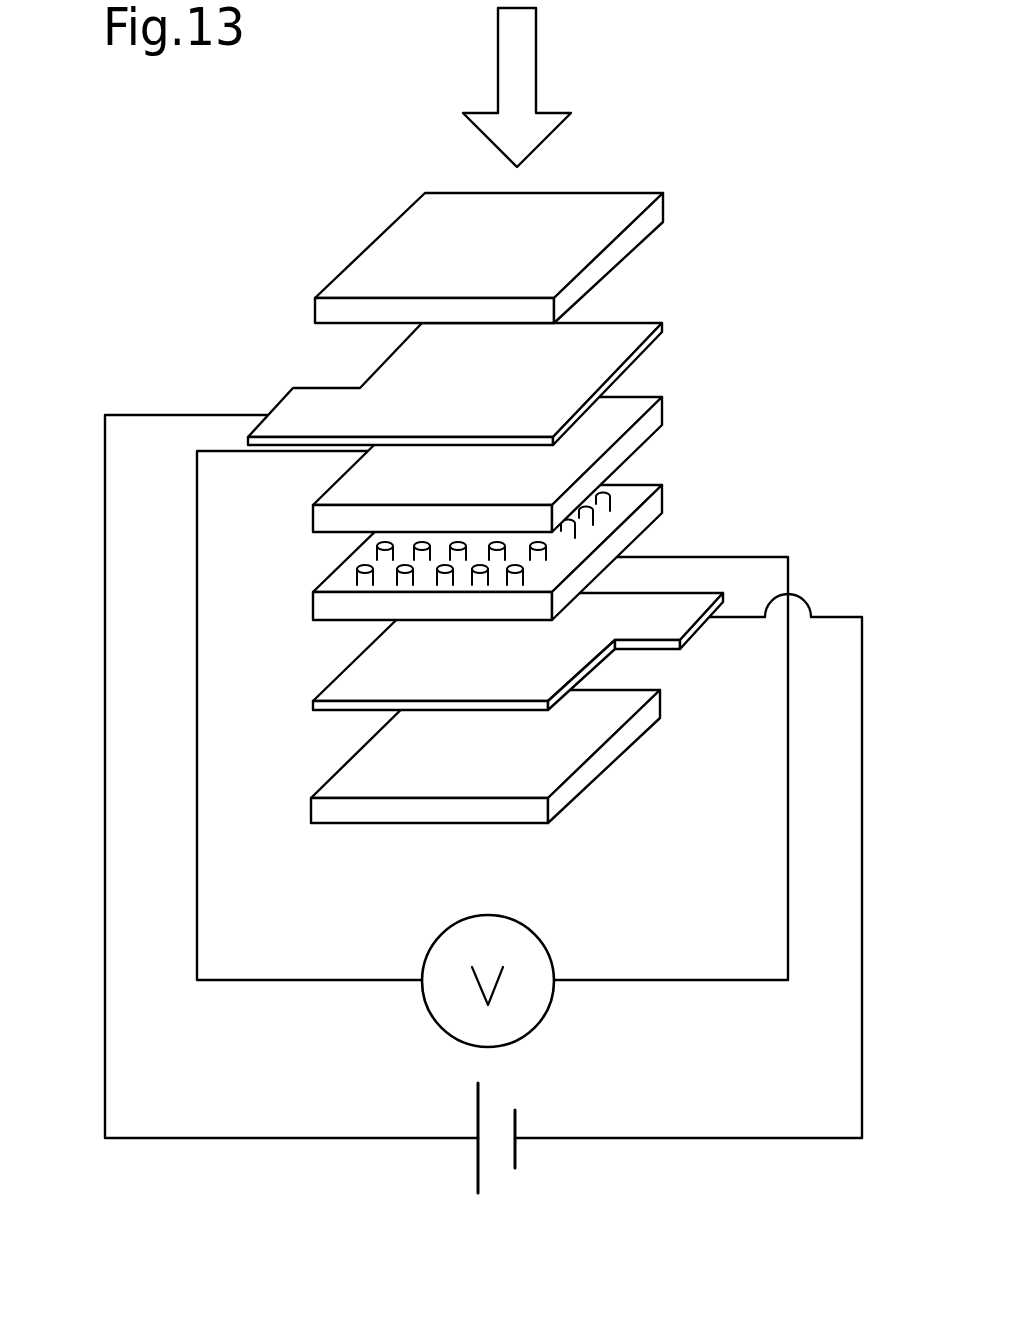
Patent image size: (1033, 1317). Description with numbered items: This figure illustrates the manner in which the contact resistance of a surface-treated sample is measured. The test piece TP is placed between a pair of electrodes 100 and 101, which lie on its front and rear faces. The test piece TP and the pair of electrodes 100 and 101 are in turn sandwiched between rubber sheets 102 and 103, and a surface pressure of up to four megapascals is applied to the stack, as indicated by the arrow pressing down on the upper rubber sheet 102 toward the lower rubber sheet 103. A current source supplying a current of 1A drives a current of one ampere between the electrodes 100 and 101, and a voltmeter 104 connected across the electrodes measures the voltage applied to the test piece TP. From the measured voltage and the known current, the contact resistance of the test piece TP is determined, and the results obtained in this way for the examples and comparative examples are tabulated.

The electrode 100 is at (637, 353).
The electrode 101 is at (667, 643).
The rubber sheet 102 is at (613, 256).
The rubber sheet 103 is at (605, 763).
The voltmeter 104 is at (547, 958).
The test piece TP is at (633, 442).
The current of 1 A 1A is at (532, 1135).